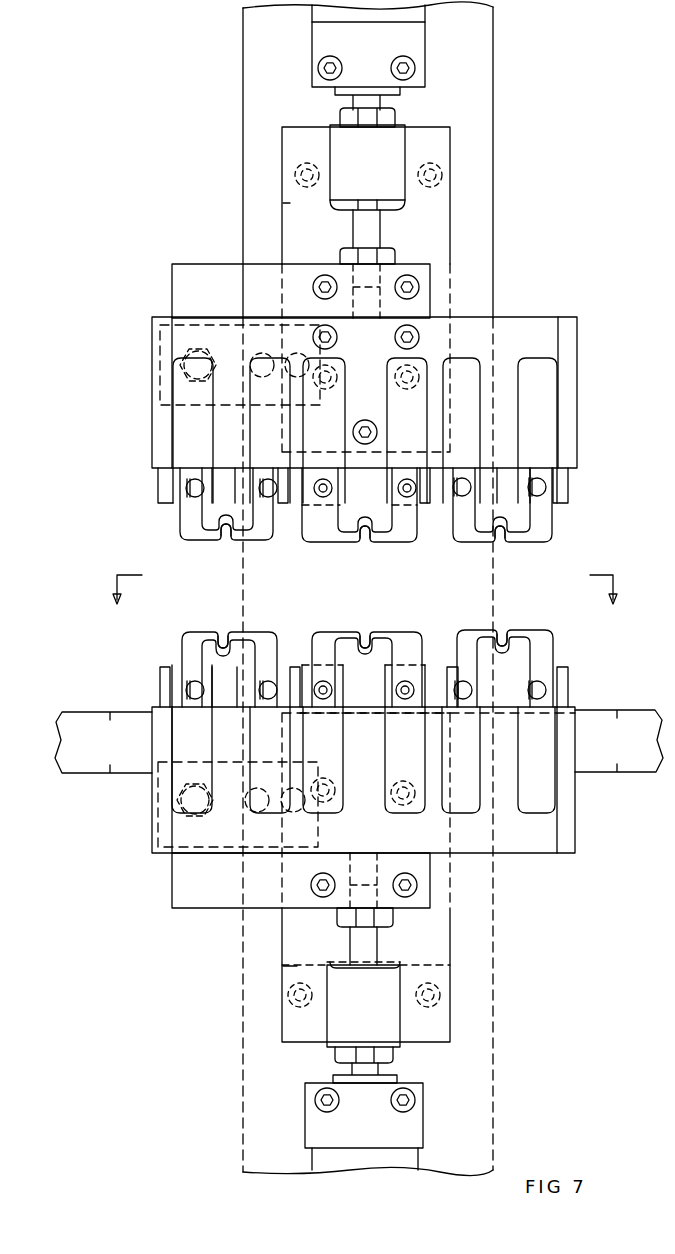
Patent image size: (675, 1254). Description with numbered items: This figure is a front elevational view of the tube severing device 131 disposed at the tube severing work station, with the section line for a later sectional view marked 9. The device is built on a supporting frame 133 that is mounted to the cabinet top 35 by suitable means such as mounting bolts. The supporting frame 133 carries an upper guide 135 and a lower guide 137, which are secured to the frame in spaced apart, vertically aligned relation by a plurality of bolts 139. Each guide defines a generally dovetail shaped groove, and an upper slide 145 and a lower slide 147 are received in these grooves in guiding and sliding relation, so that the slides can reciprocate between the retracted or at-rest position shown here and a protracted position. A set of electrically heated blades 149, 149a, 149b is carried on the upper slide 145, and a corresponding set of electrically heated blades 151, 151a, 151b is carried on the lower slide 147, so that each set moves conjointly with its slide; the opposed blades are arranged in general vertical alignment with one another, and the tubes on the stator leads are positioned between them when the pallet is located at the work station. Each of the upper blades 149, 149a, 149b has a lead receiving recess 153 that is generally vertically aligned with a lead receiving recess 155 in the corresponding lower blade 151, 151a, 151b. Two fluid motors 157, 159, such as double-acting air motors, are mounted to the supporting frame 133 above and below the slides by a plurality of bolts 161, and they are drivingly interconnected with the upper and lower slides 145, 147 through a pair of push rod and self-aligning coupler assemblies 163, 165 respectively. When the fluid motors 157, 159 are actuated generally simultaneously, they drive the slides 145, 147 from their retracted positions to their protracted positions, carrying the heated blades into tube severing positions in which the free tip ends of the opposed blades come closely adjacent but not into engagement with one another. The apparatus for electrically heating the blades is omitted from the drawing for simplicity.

The tube severing device 131 is at (627, 257).
The supporting frame 133 is at (495, 108).
The upper guide 135 is at (440, 203).
The lower guide 137 is at (445, 928).
The bolts 139 is at (293, 187).
The upper slide 145 is at (577, 380).
The lower slide 147 is at (570, 828).
The electrically heated blade 149 is at (185, 543).
The electrically heated blade 149a is at (330, 542).
The electrically heated blade 149b is at (480, 543).
The electrically heated blade 151 is at (192, 630).
The electrically heated blade 151a is at (340, 632).
The electrically heated blade 151b is at (473, 630).
The lead receiving recess 153 is at (225, 540).
The lead receiving recess 155 is at (223, 632).
The fluid motor 157 is at (418, 50).
The fluid motor 159 is at (410, 1125).
The bolts 161 is at (323, 67).
The push rod and self-aligning coupler assembly 163 is at (330, 145).
The push rod and self-aligning coupler assembly 165 is at (327, 1015).
The cabinet top 35 is at (60, 740).
The section line 9- 9 is at (364, 602).